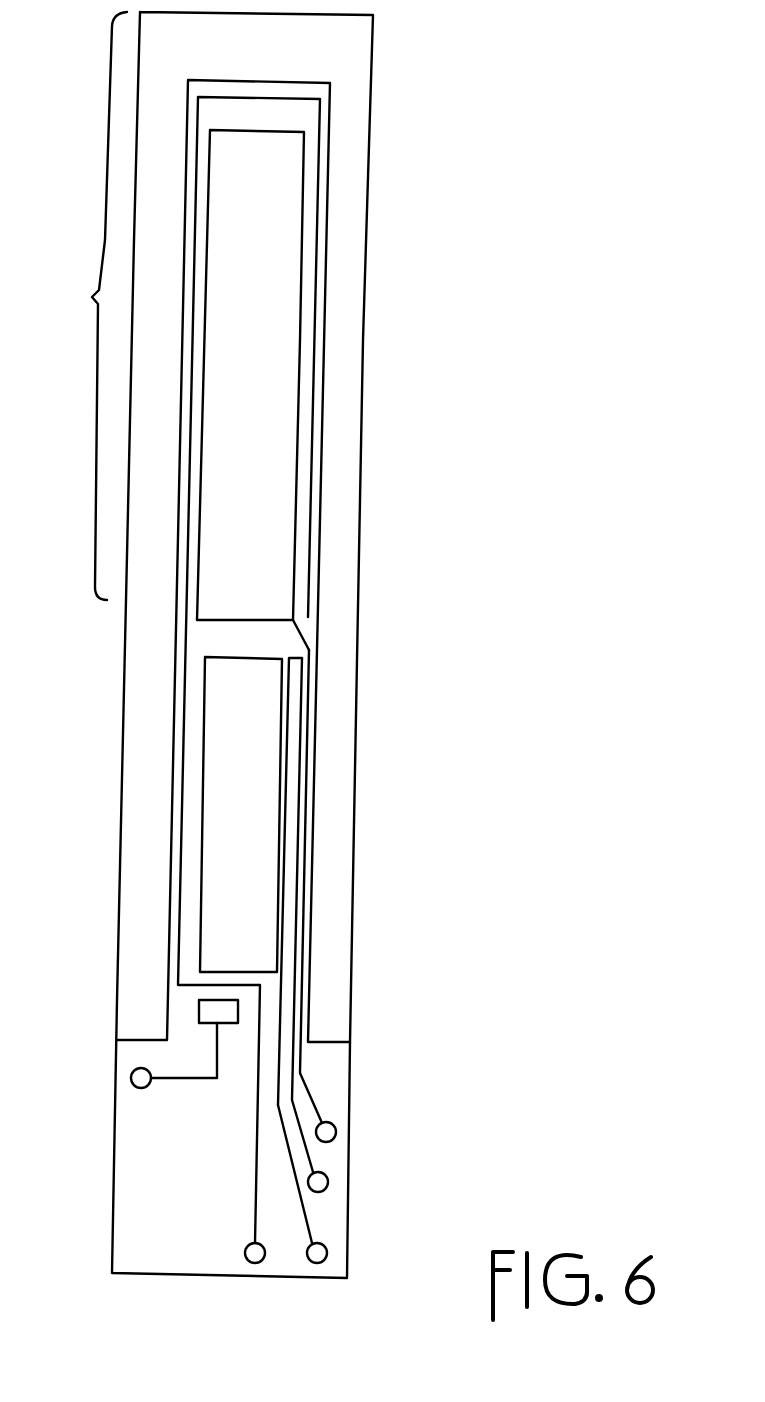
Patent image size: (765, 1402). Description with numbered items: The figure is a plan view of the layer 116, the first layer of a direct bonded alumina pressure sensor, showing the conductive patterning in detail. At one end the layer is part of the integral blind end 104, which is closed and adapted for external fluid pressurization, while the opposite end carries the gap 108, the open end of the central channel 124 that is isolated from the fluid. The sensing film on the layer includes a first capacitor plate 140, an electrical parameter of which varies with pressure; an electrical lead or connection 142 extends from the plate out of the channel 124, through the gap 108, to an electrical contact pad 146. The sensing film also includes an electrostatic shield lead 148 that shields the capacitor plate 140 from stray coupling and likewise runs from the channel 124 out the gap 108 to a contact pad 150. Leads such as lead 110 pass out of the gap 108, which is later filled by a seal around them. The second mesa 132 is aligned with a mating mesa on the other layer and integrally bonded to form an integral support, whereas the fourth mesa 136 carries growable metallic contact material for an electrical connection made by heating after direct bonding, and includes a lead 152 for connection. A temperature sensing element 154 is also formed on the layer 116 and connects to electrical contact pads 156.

The integral blind end 104 is at (79, 306).
The gap 108 is at (190, 1058).
The lead 110 is at (163, 1082).
The layer 116 is at (386, 119).
The channel 124 is at (272, 636).
The second mesa 132 is at (217, 775).
The fourth mesa 136 is at (212, 1008).
The first capacitor plate 140 is at (282, 342).
The electrical lead or connection 142 is at (313, 1085).
The electrical contact pad 146 is at (336, 1124).
The electrostatic shield lead 148 is at (293, 102).
The contact pad 150 is at (248, 1246).
The lead 152 is at (133, 1070).
The temperature sensing element 154 is at (303, 702).
The electrical contact pads 156 is at (325, 1245).